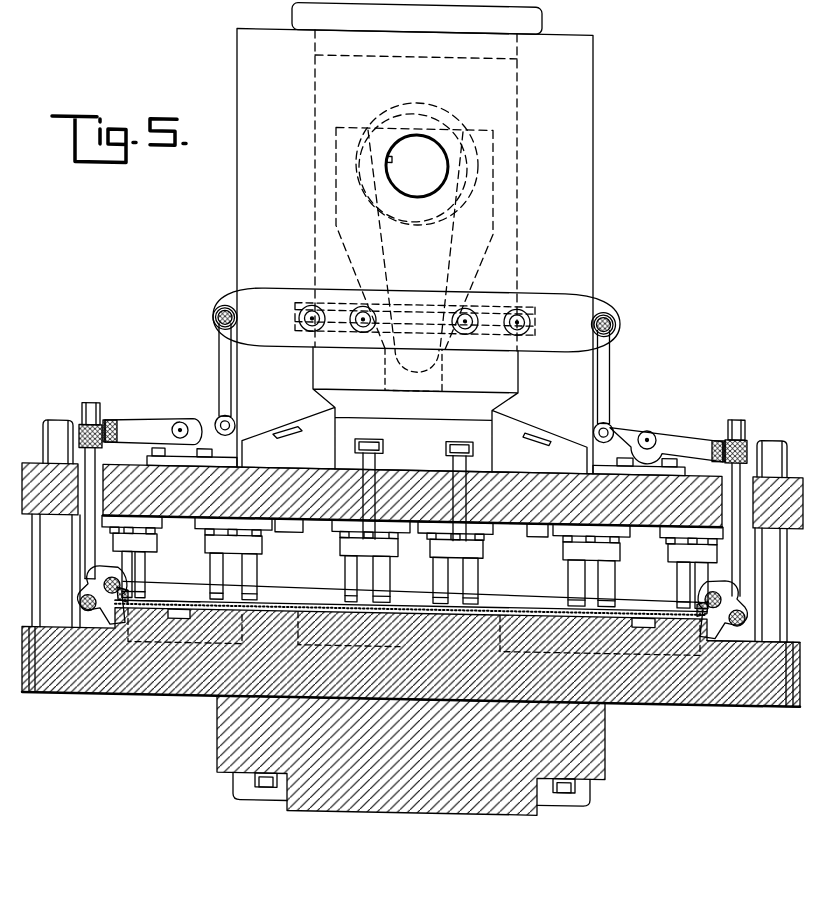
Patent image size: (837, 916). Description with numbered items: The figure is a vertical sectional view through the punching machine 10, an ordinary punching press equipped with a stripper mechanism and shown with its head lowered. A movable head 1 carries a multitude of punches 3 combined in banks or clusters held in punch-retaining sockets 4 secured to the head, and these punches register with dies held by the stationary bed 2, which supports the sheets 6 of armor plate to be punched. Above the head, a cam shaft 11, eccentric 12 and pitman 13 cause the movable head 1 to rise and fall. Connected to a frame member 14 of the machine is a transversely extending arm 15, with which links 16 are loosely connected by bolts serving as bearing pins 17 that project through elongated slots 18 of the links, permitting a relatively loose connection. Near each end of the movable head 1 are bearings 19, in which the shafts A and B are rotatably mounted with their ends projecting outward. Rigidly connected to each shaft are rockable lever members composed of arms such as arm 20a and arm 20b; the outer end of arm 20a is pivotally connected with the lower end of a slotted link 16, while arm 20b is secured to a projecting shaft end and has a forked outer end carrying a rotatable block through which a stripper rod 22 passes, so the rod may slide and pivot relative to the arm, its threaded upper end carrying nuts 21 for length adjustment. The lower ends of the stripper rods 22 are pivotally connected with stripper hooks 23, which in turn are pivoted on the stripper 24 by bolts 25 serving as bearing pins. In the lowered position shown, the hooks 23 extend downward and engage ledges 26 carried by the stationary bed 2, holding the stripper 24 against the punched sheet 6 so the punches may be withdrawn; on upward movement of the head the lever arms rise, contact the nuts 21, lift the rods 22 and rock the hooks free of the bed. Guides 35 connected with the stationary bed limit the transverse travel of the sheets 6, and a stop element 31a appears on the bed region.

The movable head 1 is at (546, 468).
The stationary bed 2 is at (168, 702).
The punches 3 is at (148, 568).
The punch-retaining sockets 4 is at (207, 547).
The sheets 6 is at (283, 603).
The punching machine 10 is at (543, 22).
The cam shaft 11 is at (417, 165).
The eccentric 12 is at (463, 189).
The pitman 13 is at (460, 252).
The frame member 14 is at (415, 251).
The transversely extending arm 15 is at (416, 320).
The links 16 is at (223, 372).
The bearing pins 17 is at (215, 314).
The elongated slots 18 is at (220, 332).
The bearings 19 is at (688, 421).
The arm 20a is at (202, 424).
The arm 20b is at (130, 427).
The nuts 21 is at (97, 421).
The stripper rods 22 is at (93, 411).
The stripper hooks 23 is at (88, 586).
The stripper 24 is at (178, 595).
The bolts 25 is at (128, 589).
The ledges 26 is at (117, 634).
The stop 31a is at (183, 616).
The guides 35 is at (730, 629).
The shaft A is at (163, 432).
The shaft B is at (650, 434).